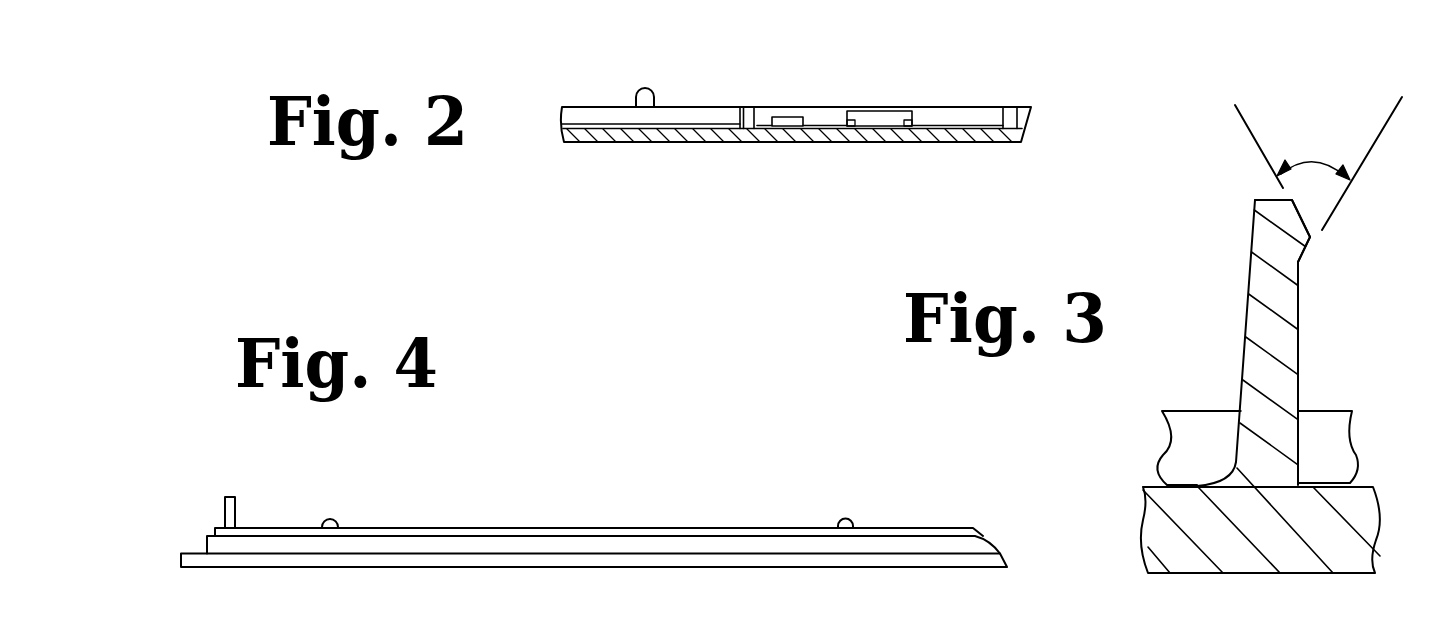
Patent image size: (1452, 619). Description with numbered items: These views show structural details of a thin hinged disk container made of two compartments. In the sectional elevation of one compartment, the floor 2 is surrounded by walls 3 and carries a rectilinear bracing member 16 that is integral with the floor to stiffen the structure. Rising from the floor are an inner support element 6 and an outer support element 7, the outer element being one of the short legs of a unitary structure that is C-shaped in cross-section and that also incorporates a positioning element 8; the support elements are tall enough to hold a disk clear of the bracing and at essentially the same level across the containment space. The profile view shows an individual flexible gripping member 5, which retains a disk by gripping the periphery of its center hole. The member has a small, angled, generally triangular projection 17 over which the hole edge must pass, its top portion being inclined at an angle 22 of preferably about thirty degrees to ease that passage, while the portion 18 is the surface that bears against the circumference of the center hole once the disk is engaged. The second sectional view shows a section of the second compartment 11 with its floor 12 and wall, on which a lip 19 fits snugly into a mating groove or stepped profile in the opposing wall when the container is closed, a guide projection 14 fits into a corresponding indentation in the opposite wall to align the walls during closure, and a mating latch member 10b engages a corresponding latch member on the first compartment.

In FIG. 3, the floor 2 is at (1162, 485).
In FIG. 2, the walls 3 is at (587, 107).
In FIG. 4, the walls 3 is at (543, 545).
In FIG. 3, the flexible gripping member 5 is at (1240, 340).
In FIG. 2, the inner support element 6 is at (783, 120).
In FIG. 3, the inner support element 6 is at (1323, 410).
In FIG. 2, the outer support element 7 is at (927, 133).
In FIG. 2, the positioning element 8 is at (880, 110).
In FIG. 4, the mating latch member 10b is at (235, 511).
In FIG. 2, the second compartment 11 is at (637, 143).
In FIG. 4, the floor 12 is at (677, 555).
In FIG. 2, the guide projection 14 is at (636, 100).
In FIG. 4, the guide projection 14 is at (338, 527).
In FIG. 2, the bracing member 16 is at (718, 122).
In FIG. 3, the projection 17 is at (1312, 242).
In FIG. 3, the bearing portion 18 is at (1302, 320).
In FIG. 4, the lip 19 is at (287, 528).
In FIG. 3, the angle 22 is at (1318, 155).